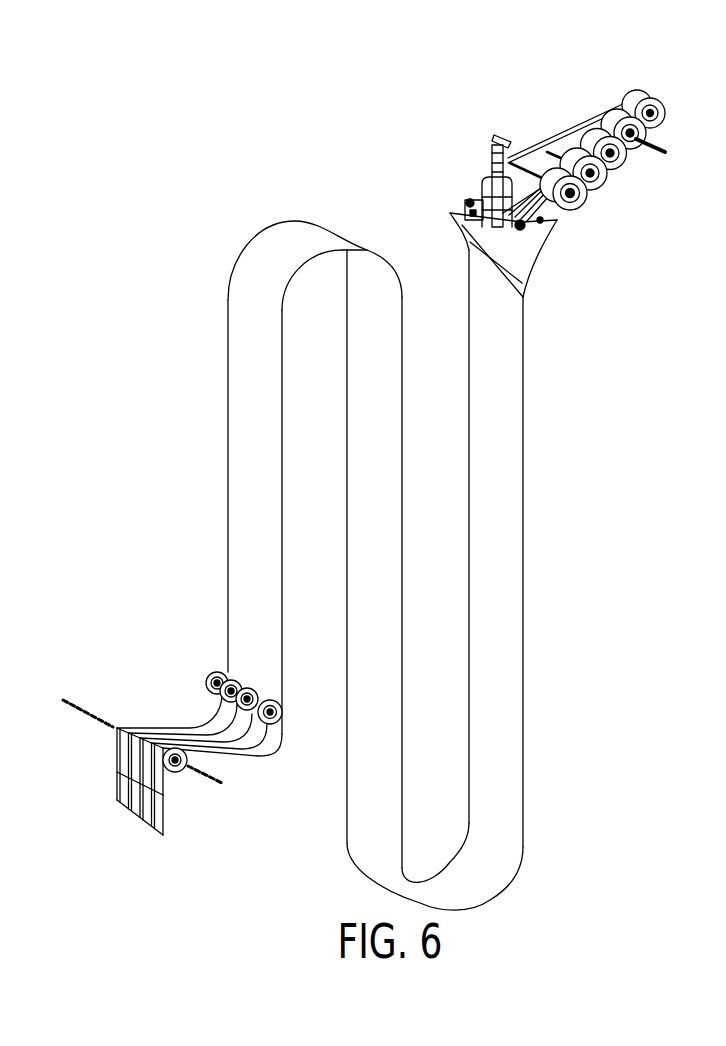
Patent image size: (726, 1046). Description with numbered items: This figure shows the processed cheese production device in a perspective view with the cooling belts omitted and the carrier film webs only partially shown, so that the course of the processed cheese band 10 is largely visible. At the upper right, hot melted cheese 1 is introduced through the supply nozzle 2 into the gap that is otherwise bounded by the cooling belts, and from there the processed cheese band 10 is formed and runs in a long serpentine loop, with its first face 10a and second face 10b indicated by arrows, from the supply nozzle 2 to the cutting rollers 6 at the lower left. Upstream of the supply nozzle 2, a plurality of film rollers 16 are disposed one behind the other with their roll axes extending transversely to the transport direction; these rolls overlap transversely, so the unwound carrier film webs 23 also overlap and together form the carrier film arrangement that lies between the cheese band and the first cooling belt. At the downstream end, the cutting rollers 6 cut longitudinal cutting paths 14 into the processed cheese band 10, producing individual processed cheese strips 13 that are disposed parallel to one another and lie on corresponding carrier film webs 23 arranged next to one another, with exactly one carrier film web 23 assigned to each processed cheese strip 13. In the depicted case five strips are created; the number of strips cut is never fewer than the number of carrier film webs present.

The melted cheese 1 is at (483, 253).
The supply nozzle 2 is at (493, 142).
The cutting rollers 6 is at (217, 671).
The processed cheese band 10 is at (481, 395).
The first face of processed cheese band 10a is at (354, 834).
The second face of processed cheese band 10b is at (472, 494).
The processed cheese strip 13 is at (220, 722).
The longitudinal cutting path 14 is at (250, 689).
The film roller 16 is at (616, 112).
The carrier film web 23 is at (540, 220).